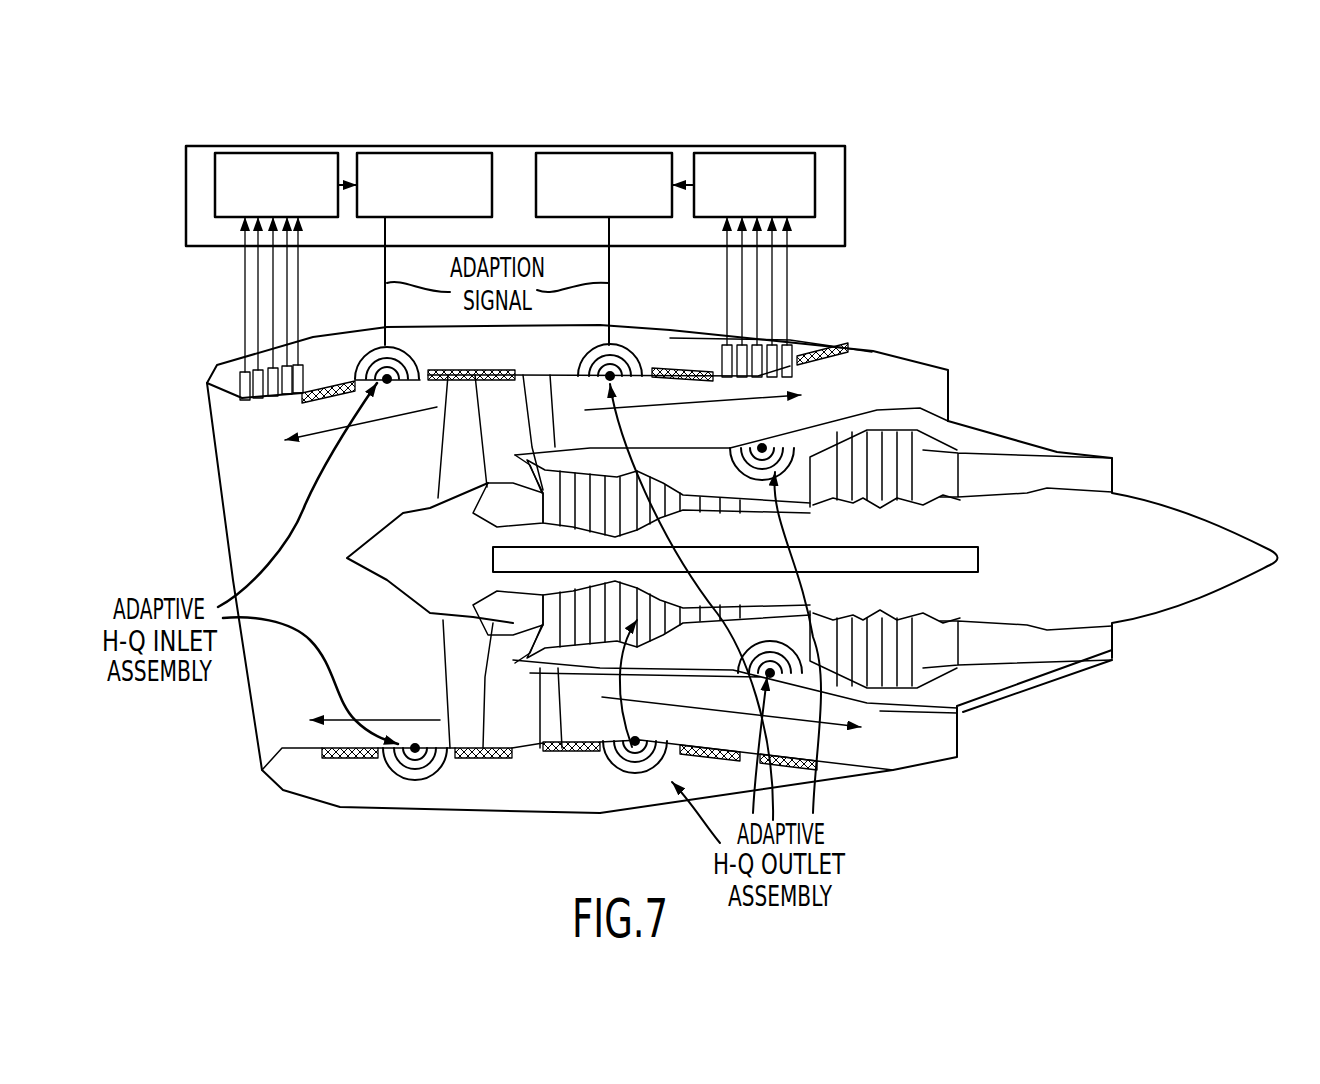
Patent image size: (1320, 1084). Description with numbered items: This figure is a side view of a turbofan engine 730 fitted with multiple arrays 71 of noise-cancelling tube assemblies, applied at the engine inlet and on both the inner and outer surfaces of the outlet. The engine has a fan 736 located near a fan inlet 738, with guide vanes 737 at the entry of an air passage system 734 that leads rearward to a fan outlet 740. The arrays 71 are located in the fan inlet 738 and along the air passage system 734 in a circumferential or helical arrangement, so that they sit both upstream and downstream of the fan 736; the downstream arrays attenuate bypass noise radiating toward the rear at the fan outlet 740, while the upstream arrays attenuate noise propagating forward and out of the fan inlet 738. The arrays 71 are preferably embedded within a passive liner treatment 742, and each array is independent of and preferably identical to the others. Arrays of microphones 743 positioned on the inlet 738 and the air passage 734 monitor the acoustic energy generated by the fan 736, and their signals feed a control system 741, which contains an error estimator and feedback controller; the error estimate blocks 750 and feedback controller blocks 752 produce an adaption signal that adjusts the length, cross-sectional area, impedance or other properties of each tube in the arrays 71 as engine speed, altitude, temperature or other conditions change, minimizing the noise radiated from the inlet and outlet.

The array 71 is at (377, 348).
The turbofan engine 730 is at (703, 544).
The air passage system 734 is at (948, 385).
The fan 736 is at (453, 467).
The guide vanes 737 is at (550, 747).
The fan inlet 738 is at (252, 502).
The fan outlet 740 is at (960, 745).
The control system 741 is at (553, 214).
The passive liner treatment 742 is at (343, 757).
The arrays of microphones 743 is at (287, 383).
The error estimate module 750 is at (272, 152).
The feedback controller 752 is at (425, 152).